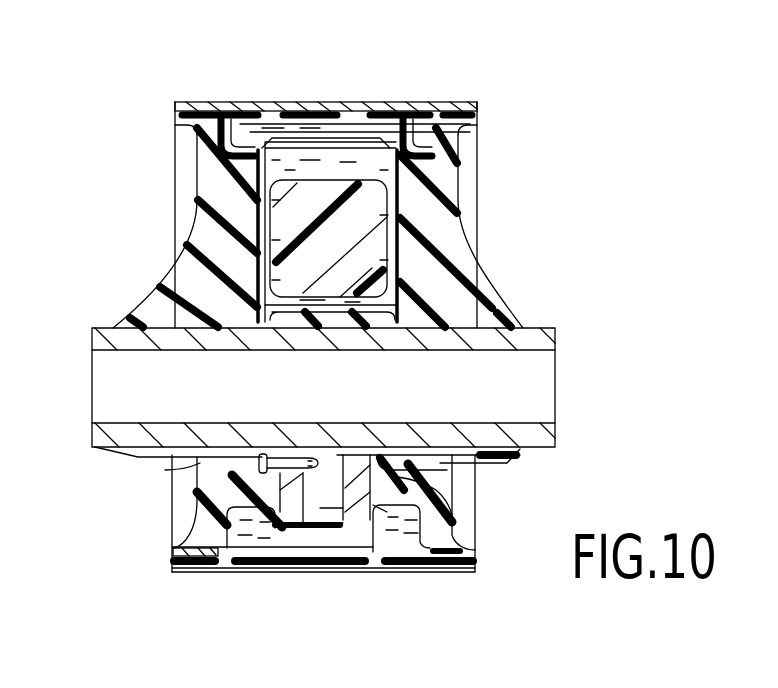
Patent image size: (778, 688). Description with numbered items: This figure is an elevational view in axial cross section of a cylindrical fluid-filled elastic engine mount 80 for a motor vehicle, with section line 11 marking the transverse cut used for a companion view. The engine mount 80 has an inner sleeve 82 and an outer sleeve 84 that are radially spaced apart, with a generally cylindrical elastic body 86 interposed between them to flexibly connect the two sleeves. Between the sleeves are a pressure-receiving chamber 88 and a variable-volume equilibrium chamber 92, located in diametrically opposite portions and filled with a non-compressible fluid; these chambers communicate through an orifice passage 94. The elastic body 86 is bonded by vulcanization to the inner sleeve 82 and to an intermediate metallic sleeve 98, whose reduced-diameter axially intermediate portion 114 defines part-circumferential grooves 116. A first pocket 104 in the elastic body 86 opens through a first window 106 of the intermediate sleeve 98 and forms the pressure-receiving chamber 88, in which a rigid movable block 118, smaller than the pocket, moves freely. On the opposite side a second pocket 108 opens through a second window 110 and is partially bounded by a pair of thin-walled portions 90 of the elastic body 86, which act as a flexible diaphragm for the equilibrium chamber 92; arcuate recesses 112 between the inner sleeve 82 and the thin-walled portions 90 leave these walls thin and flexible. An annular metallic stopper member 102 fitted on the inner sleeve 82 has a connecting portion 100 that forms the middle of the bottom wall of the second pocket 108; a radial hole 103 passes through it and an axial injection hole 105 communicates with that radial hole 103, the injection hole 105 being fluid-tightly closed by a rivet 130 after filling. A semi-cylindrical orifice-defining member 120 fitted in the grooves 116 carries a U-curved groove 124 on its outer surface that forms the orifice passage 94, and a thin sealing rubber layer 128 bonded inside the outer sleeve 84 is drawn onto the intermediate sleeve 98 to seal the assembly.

The engine mount 80 is at (152, 74).
The inner sleeve 82 is at (94, 433).
The outer sleeve 84 is at (457, 573).
The elastic body 86 is at (450, 235).
The pressure-receiving chamber 88 is at (270, 168).
The thin-walled portions 90 is at (197, 510).
The equilibrium chamber 92 is at (294, 552).
The orifice passage 94 is at (390, 120).
The intermediate metallic sleeve 98 is at (209, 100).
The connecting portion 100 is at (372, 546).
The stopper member 102 is at (292, 525).
The radial hole 103 is at (343, 495).
The first pocket 104 is at (267, 225).
The injection hole 105 is at (301, 457).
The first window 106 is at (405, 133).
The second pocket 108 is at (413, 555).
The second window 110 is at (233, 572).
The arcuate recesses 112 is at (198, 464).
The axially intermediate portion 114 is at (262, 146).
The part-circumferential grooves 116 is at (423, 110).
The movable block 118 is at (367, 263).
The orifice-defining member 120 is at (333, 127).
The U-curved groove 124 is at (290, 120).
The sealing rubber layer 128 is at (473, 562).
The rivet 130 is at (252, 455).
The section line 11- 11 is at (333, 3).